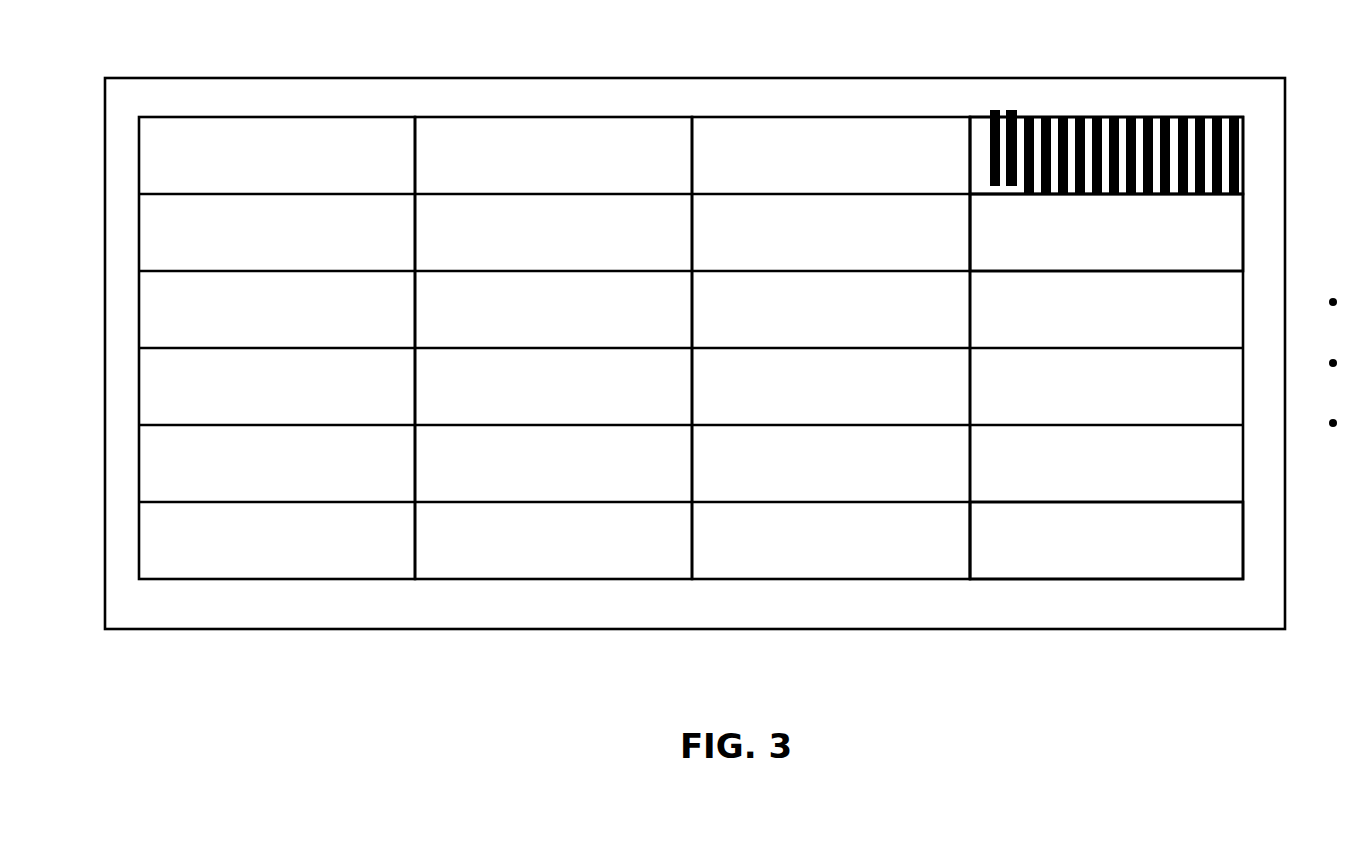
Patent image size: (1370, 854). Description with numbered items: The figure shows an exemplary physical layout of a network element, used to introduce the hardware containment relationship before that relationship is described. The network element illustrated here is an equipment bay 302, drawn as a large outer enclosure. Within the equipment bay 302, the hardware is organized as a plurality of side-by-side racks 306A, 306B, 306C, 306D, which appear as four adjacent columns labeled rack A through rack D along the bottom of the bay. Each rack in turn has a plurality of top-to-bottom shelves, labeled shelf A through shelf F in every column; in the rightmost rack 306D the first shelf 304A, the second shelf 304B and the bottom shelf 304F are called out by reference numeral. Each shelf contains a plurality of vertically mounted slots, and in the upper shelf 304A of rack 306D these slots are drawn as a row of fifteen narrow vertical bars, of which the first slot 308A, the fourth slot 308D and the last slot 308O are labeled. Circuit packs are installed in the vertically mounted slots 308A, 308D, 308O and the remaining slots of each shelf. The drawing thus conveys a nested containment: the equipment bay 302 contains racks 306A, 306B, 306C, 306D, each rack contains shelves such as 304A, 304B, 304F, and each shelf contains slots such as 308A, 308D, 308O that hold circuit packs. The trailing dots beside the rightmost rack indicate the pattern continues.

The equipment bay 302 is at (792, 78).
The shelf 304A is at (1220, 180).
The shelf 304B is at (1220, 260).
The shelf 304F is at (1218, 566).
The rack 306A is at (198, 582).
The rack 306B is at (478, 582).
The rack 306C is at (745, 581).
The rack 306D is at (1028, 581).
The vertically mounted slot 308A is at (993, 110).
The vertically mounted slot 308D is at (1042, 114).
The vertically mounted slot 308O is at (1230, 114).